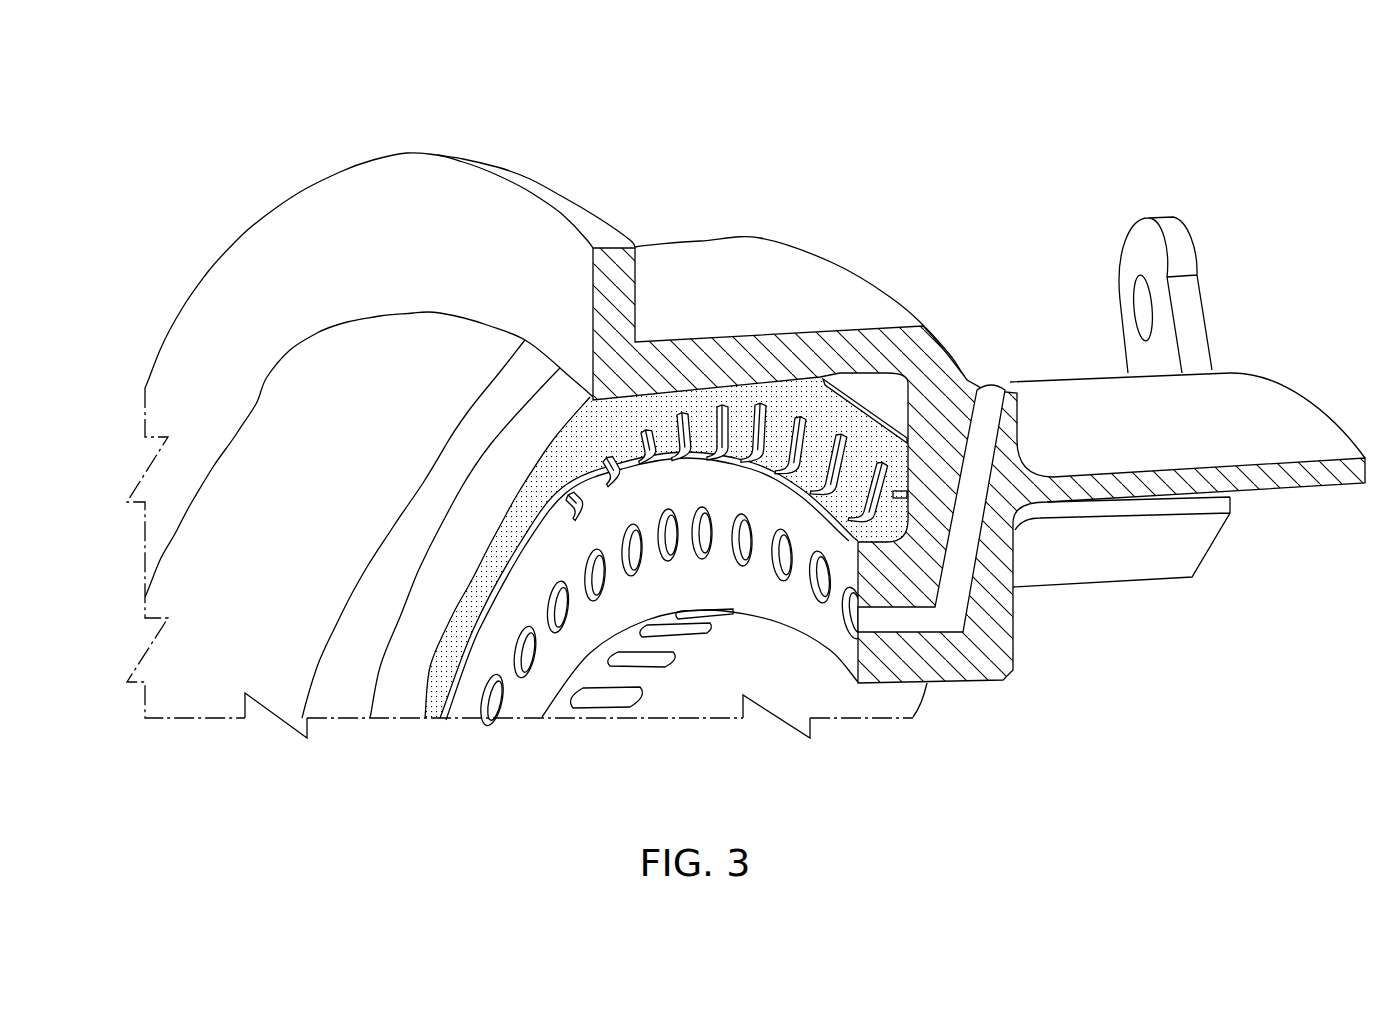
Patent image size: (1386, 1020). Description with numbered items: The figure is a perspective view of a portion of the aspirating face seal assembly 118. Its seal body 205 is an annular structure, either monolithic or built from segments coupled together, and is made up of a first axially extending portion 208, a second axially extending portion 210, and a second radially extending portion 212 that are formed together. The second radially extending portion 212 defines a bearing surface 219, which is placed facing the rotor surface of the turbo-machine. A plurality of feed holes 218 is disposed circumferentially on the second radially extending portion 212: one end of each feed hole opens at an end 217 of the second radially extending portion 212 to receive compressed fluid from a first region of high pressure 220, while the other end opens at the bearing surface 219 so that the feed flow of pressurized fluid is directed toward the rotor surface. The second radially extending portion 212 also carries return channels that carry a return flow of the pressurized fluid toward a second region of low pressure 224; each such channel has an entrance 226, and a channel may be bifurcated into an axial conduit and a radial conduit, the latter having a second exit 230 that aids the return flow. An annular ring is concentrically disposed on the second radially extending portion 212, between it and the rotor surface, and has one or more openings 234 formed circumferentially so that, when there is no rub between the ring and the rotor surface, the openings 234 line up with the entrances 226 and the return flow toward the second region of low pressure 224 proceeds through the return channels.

The aspirating face seal assembly 118 is at (1183, 99).
The seal body 205 is at (852, 262).
The first axially extending portion 208 is at (1290, 408).
The second axially extending portion 210 is at (690, 250).
The second radially extending portion 212 is at (1013, 620).
The end of the second radially extending portion 217 is at (990, 388).
The feed holes 218 is at (552, 622).
The bearing surface 219 is at (823, 632).
The first region of high pressure 220 is at (890, 188).
The second region of low pressure 224 is at (751, 785).
The entrance of return channel 226 is at (746, 452).
The second exit 230 is at (648, 660).
The openings 234 is at (682, 416).